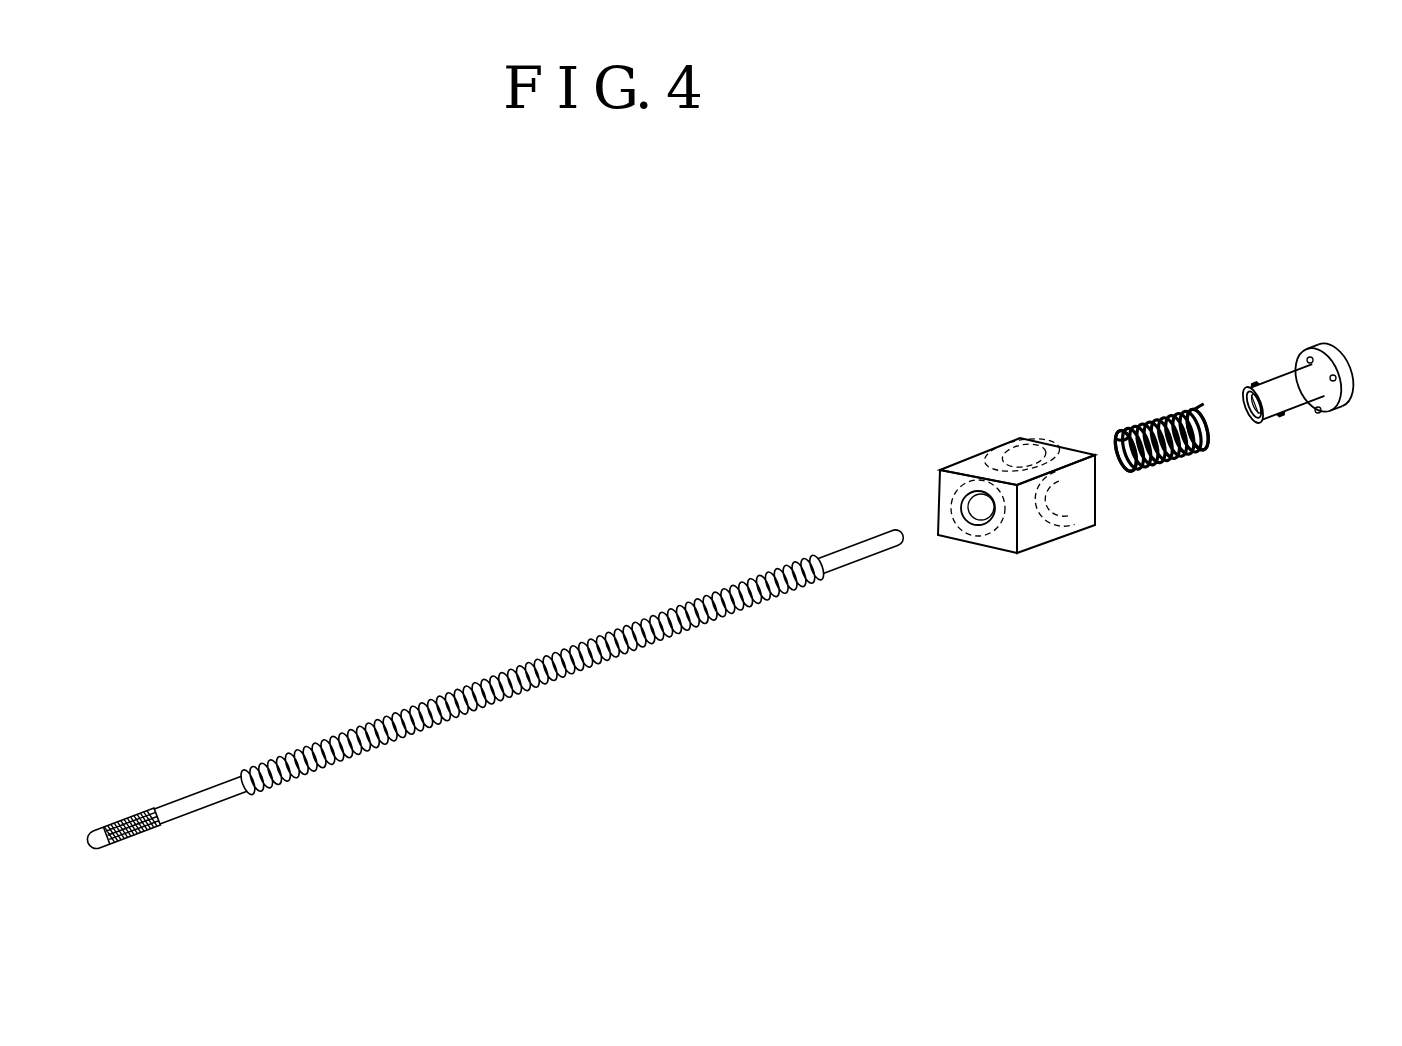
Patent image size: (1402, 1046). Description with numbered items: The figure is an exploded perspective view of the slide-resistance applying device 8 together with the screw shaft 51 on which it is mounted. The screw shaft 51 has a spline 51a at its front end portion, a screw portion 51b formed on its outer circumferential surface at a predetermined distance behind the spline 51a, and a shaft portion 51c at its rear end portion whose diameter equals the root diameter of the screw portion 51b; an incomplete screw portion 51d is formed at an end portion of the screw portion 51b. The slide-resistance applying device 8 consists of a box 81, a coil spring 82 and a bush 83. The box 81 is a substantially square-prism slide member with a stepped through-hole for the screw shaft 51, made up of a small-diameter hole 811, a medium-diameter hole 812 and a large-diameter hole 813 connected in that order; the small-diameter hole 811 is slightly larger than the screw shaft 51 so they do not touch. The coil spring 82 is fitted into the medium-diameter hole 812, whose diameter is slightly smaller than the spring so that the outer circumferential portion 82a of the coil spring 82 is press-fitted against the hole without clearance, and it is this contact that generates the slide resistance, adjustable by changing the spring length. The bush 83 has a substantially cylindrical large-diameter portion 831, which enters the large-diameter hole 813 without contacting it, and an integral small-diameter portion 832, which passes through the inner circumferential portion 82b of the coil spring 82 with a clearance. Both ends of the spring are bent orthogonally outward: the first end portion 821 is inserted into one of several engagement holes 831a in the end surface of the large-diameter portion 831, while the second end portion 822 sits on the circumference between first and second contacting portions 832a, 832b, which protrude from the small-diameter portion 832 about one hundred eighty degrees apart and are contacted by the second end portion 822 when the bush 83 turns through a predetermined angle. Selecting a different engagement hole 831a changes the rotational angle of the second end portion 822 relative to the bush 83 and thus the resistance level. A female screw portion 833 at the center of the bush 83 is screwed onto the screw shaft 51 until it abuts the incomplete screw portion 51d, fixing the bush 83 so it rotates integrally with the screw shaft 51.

The screw shaft 51 is at (495, 667).
The spline 51a is at (130, 818).
The screw portion 51b is at (447, 690).
The shaft portion 51c is at (847, 553).
The incomplete screw portion 51d is at (228, 773).
The slide-resistance applying device 8 is at (1111, 477).
The box 81 is at (970, 460).
The small-diameter hole 811 is at (962, 496).
The medium-diameter hole 812 is at (1007, 467).
The large-diameter hole 813 is at (1032, 440).
The coil spring 82 is at (1134, 450).
The first end portion 821 is at (1200, 403).
The second end portion 822 is at (1122, 427).
The outer circumferential portion 82a is at (1185, 463).
The inner circumferential portion 82b is at (1127, 477).
The bush 83 is at (1284, 414).
The large-diameter portion 831 is at (1333, 352).
The engagement holes 831a is at (1310, 363).
The small-diameter portion 832 is at (1290, 378).
The first contacting portion 832a is at (1253, 385).
The second contacting portion 832b is at (1278, 424).
The female screw portion 833 is at (1247, 425).